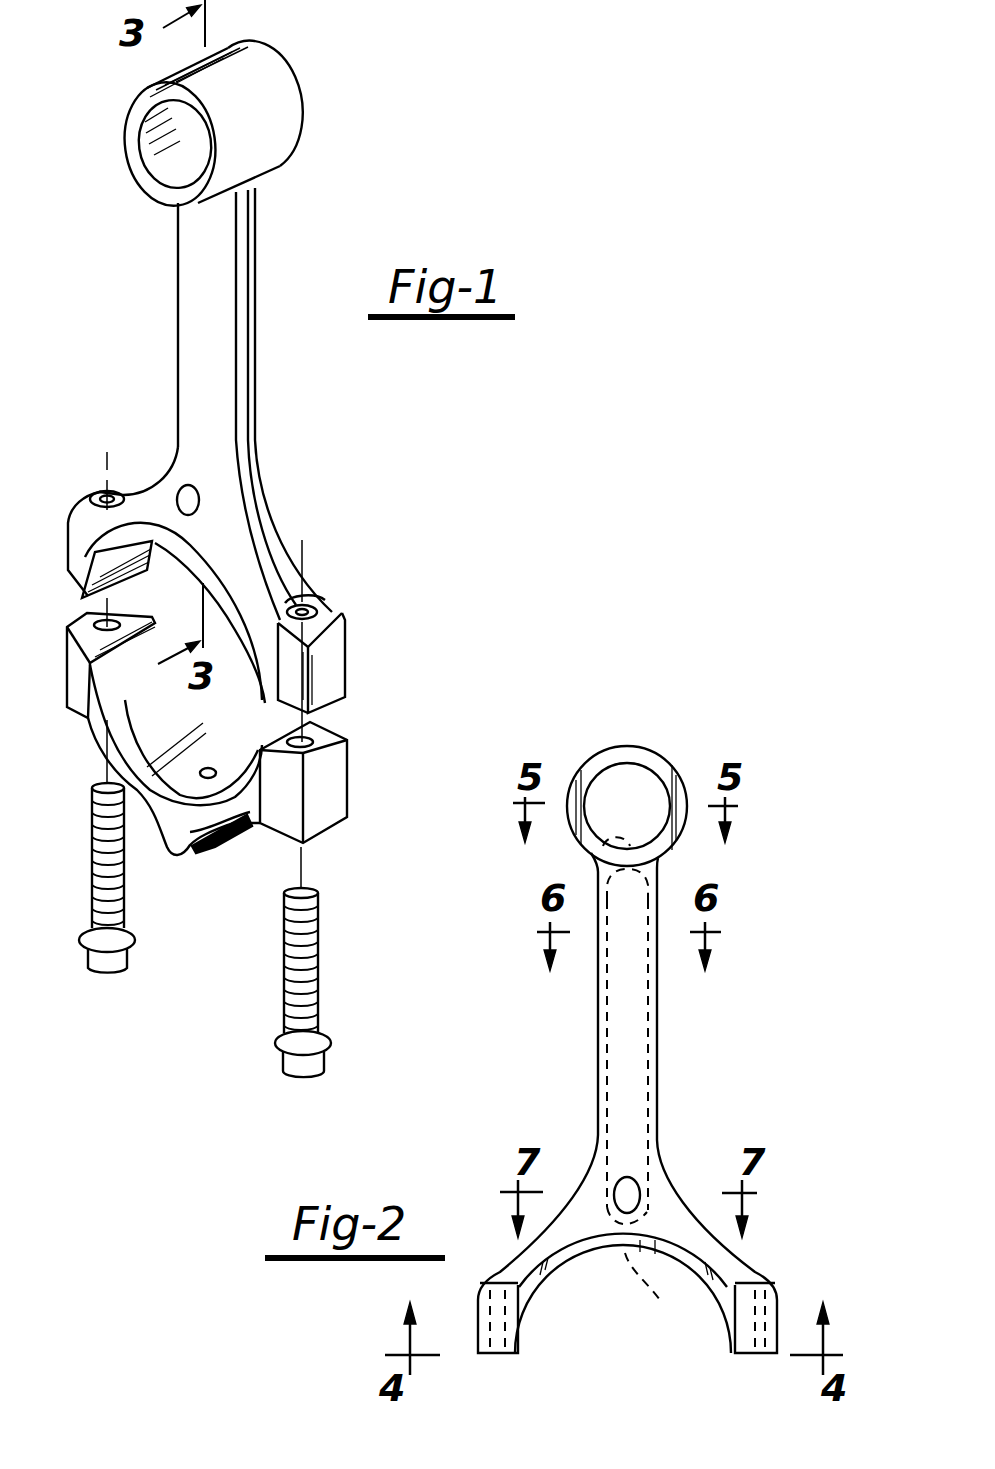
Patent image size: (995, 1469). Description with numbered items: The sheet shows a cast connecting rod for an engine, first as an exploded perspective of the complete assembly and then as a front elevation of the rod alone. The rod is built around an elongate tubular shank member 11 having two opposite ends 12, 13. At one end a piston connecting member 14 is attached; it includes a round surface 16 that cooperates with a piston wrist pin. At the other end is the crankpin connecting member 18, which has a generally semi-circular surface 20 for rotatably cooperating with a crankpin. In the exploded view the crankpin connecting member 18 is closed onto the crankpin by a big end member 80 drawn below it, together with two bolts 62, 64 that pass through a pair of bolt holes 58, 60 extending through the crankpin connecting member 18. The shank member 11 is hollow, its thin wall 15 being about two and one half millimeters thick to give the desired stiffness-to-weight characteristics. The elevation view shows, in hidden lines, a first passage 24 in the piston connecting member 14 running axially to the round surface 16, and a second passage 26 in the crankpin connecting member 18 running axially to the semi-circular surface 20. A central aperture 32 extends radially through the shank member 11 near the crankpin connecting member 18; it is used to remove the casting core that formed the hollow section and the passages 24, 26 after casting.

In FIG. 1, the elongate tubular shank member 11 is at (248, 268).
In FIG. 1, the end of shank member 12 is at (246, 189).
In FIG. 2, the end of shank member 12 is at (657, 866).
In FIG. 1, the end of shank member 13 is at (233, 440).
In FIG. 2, the end of shank member 13 is at (660, 1140).
In FIG. 1, the piston connecting member 14 is at (266, 80).
In FIG. 2, the piston connecting member 14 is at (647, 745).
In FIG. 2, the thin wall 15 is at (658, 1038).
In FIG. 1, the round surface 16 is at (155, 152).
In FIG. 2, the round surface 16 is at (598, 778).
In FIG. 1, the crankpin connecting member 18 is at (267, 533).
In FIG. 2, the crankpin connecting member 18 is at (572, 1230).
In FIG. 1, the semi-circular surface 20 is at (85, 584).
In FIG. 2, the first passage 24 is at (580, 850).
In FIG. 2, the second passage 26 is at (652, 1295).
In FIG. 1, the central aperture 32 is at (182, 487).
In FIG. 2, the central aperture 32 is at (627, 1183).
In FIG. 1, the bolt hole 58 is at (100, 502).
In FIG. 2, the bolt hole 58 is at (495, 1353).
In FIG. 1, the bolt hole 60 is at (310, 614).
In FIG. 2, the bolt hole 60 is at (760, 1278).
In FIG. 1, the bolt 62 is at (92, 854).
In FIG. 1, the bolt 64 is at (318, 930).
In FIG. 1, the big end member 80 is at (182, 838).